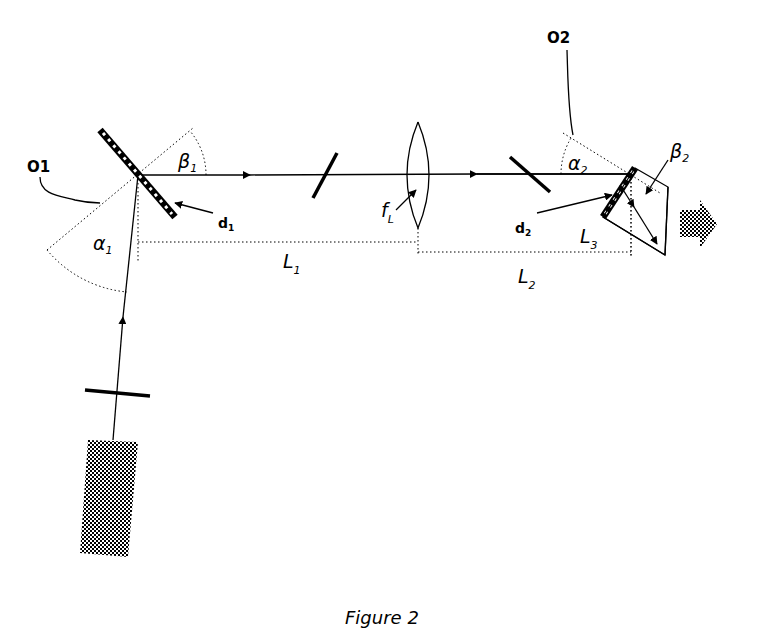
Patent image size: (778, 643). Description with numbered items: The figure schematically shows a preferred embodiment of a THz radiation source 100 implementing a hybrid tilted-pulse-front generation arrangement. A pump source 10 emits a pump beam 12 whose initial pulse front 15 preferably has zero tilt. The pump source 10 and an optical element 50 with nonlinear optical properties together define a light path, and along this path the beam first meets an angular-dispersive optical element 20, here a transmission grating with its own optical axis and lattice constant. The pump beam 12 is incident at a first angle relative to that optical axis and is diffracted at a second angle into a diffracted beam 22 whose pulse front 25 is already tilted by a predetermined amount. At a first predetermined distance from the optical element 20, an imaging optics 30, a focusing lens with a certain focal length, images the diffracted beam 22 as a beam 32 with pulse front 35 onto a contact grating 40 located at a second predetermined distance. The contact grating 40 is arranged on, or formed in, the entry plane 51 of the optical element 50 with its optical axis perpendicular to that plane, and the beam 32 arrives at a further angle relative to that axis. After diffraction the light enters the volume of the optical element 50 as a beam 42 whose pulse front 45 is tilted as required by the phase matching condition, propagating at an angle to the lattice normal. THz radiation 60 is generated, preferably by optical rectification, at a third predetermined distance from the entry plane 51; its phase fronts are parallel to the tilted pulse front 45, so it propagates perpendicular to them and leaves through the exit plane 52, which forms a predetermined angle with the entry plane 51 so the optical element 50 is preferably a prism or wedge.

The pump source 10 is at (123, 497).
The pump beam 12 is at (127, 302).
The initial pulse front 15 is at (153, 397).
The angular-dispersive optical element 20 is at (107, 127).
The diffracted beam 22 is at (258, 173).
The pulse front of the diffracted beam 25 is at (328, 157).
The imaging optics 30 is at (413, 153).
The imaged beam 32 is at (547, 173).
The pulse front of the imaged beam 35 is at (510, 157).
The contact grating 40 is at (617, 187).
The tilted-pulse-front beam 42 is at (652, 255).
The tilted pulse front 45 is at (668, 193).
The optical element 50 is at (622, 233).
The entry plane 51 is at (630, 172).
The exit plane 52 is at (667, 233).
The THz radiation 60 is at (702, 250).
The THz radiation source 100 is at (427, 442).